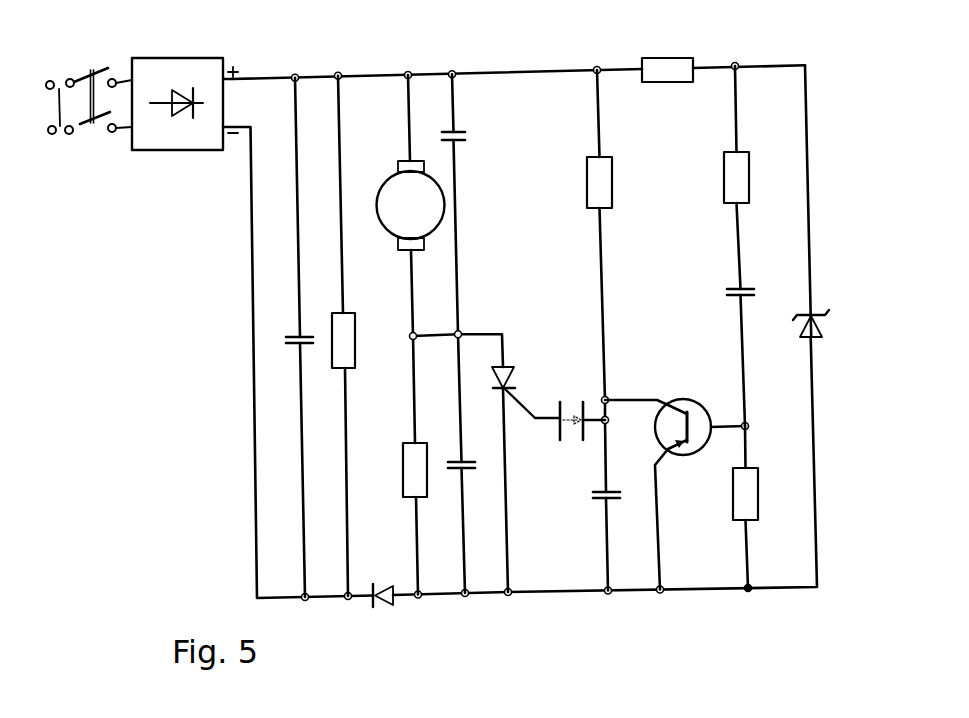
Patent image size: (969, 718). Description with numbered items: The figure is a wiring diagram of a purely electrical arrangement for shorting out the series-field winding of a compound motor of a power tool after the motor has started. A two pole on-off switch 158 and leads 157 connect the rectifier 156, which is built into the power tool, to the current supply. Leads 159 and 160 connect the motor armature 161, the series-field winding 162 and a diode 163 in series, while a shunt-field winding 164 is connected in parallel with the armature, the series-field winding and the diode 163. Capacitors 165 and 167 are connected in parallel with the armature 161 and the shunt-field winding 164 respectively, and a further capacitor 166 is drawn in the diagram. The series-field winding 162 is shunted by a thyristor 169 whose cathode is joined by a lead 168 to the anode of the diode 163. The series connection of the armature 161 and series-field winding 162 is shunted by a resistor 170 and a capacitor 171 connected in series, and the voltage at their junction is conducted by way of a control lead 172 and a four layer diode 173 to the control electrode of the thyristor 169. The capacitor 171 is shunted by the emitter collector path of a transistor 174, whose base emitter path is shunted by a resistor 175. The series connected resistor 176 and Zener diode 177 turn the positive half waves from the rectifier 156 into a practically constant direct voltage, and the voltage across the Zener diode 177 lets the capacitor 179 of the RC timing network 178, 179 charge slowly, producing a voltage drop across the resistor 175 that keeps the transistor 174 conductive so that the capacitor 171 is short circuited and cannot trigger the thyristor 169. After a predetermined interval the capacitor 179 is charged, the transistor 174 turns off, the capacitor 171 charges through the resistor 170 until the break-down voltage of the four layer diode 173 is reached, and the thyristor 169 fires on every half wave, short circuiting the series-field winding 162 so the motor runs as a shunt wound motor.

The rectifier 156 is at (197, 73).
The leads 157 is at (54, 80).
The two pole on-off switch 158 is at (93, 125).
The lead 159 is at (271, 76).
The lead 160 is at (250, 203).
The motor armature 161 is at (388, 196).
The series-field winding 162 is at (400, 489).
The diode 163 is at (386, 584).
The shunt-field winding 164 is at (357, 340).
The capacitor 165 is at (466, 136).
The capacitor 166 is at (476, 465).
The capacitor 167 is at (288, 339).
The lead 168 is at (509, 534).
The thyristor 169 is at (513, 372).
The resistor 170 is at (588, 177).
The capacitor 171 is at (620, 496).
The control lead 172 is at (586, 444).
The four layer diode 173 is at (567, 405).
The transistor 174 is at (692, 414).
The resistor 175 is at (734, 503).
The resistor 176 is at (670, 68).
The Zener diode 177 is at (800, 333).
The resistor of RC timing network 178 is at (725, 178).
The capacitor of RC timing network 179 is at (727, 292).